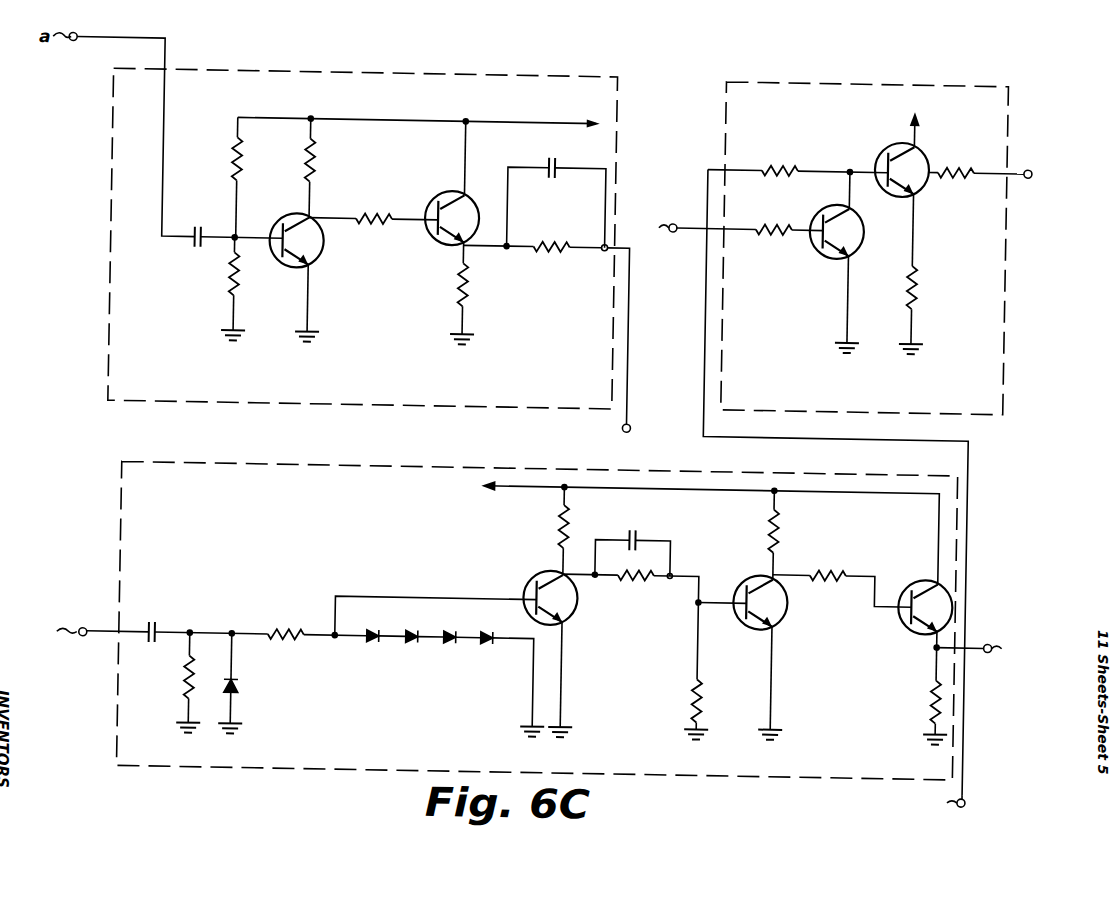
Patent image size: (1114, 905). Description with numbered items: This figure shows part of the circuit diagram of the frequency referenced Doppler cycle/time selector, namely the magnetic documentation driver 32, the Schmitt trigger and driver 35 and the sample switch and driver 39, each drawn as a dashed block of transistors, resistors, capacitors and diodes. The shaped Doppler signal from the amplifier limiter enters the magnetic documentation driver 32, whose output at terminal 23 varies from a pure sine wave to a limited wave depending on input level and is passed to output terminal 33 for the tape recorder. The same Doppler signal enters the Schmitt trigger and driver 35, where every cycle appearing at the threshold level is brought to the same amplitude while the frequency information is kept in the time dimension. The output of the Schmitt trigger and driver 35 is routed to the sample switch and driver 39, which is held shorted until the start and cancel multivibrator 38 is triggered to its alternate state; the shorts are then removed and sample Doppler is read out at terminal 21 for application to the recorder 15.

The magnetic documentation tape recorder driver 32 is at (478, 408).
The sample switch and driver 39 is at (1002, 347).
The Schmitt trigger and driver 35 is at (660, 775).
The output terminal 23 is at (630, 424).
The output terminal 33 is at (624, 455).
The terminal 21 is at (1027, 166).
The recorder 15 is at (1052, 202).
The start and cancel multivibrator 38 is at (969, 823).